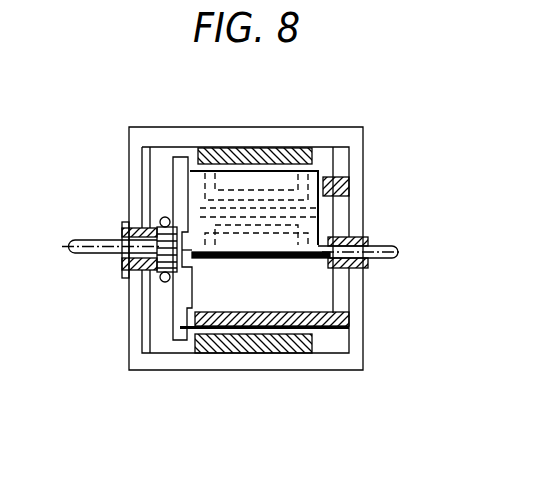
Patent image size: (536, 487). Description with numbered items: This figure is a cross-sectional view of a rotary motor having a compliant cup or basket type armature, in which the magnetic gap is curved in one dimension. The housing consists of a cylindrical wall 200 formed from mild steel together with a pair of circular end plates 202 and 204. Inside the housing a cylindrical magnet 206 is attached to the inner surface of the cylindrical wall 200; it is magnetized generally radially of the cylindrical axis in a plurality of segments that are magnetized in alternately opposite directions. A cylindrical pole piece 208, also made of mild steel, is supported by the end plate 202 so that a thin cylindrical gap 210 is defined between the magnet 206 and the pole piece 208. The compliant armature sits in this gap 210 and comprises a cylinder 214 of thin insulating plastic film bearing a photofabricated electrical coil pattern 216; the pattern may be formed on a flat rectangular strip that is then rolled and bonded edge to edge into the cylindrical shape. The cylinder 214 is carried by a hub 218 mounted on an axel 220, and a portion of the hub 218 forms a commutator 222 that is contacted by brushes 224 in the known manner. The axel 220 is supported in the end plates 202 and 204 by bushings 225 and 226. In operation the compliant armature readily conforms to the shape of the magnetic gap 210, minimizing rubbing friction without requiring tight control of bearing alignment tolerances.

The cylindrical wall 200 is at (270, 130).
The circular end plate 202 is at (357, 152).
The circular end plate 204 is at (137, 140).
The cylindrical magnet 206 is at (307, 150).
The cylindrical pole piece 208 is at (350, 325).
The cylindrical gap 210 is at (332, 335).
The cylinder 214 is at (336, 216).
The electrical coil pattern 216 is at (330, 233).
The hub 218 is at (177, 292).
The axel 220 is at (92, 240).
The commutator 222 is at (157, 270).
The brushes 224 is at (158, 216).
The bushing 225 is at (353, 268).
The bushing 226 is at (120, 268).